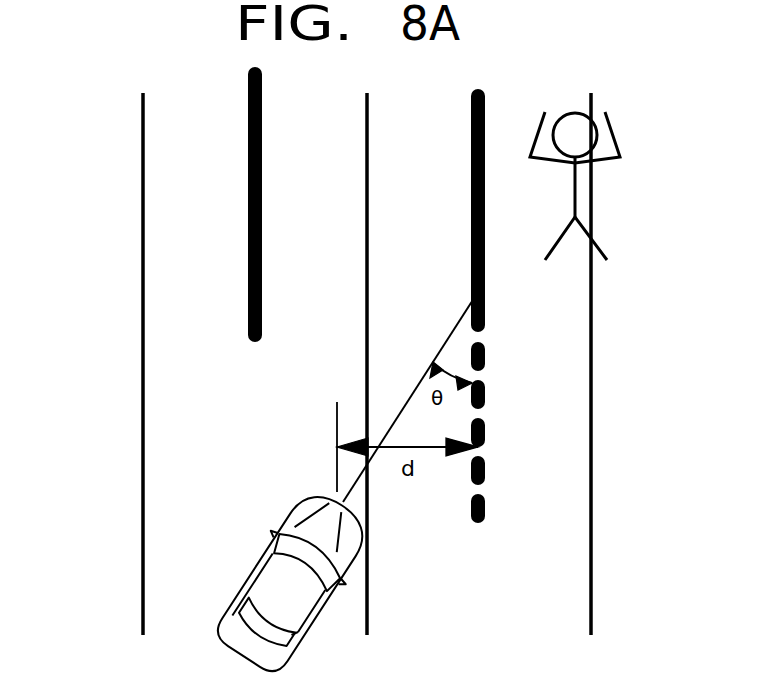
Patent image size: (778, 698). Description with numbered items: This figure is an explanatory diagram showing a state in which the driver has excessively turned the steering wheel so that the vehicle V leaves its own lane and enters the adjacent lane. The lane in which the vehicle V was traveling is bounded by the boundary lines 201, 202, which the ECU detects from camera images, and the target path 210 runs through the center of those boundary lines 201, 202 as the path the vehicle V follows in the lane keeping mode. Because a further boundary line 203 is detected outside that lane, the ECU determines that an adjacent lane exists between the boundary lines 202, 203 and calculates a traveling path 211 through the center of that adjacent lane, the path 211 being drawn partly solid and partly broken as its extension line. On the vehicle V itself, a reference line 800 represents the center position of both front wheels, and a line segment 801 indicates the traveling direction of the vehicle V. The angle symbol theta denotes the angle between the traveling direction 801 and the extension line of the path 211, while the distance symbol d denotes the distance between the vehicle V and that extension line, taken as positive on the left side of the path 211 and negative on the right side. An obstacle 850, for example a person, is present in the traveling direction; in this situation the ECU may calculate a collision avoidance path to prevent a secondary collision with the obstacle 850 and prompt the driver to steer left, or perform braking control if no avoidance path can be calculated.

The boundary line 201 is at (143, 431).
The boundary line 202 is at (365, 215).
The boundary line 203 is at (593, 410).
The target path 210 is at (250, 144).
The traveling path 211 is at (485, 103).
The reference line 800 is at (337, 435).
The line segment 801 is at (417, 385).
The obstacle 850 is at (613, 130).
The vehicle V is at (248, 577).